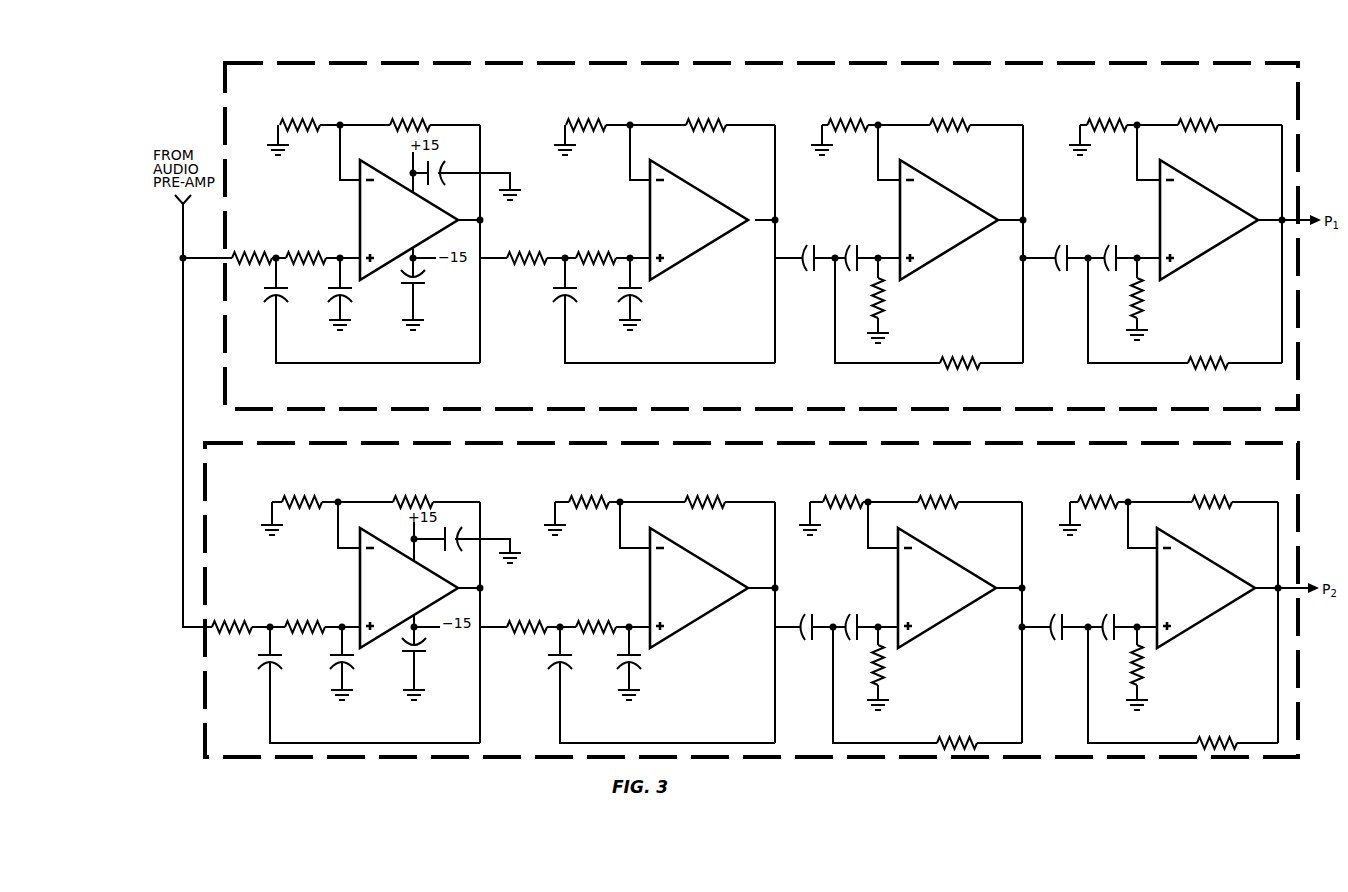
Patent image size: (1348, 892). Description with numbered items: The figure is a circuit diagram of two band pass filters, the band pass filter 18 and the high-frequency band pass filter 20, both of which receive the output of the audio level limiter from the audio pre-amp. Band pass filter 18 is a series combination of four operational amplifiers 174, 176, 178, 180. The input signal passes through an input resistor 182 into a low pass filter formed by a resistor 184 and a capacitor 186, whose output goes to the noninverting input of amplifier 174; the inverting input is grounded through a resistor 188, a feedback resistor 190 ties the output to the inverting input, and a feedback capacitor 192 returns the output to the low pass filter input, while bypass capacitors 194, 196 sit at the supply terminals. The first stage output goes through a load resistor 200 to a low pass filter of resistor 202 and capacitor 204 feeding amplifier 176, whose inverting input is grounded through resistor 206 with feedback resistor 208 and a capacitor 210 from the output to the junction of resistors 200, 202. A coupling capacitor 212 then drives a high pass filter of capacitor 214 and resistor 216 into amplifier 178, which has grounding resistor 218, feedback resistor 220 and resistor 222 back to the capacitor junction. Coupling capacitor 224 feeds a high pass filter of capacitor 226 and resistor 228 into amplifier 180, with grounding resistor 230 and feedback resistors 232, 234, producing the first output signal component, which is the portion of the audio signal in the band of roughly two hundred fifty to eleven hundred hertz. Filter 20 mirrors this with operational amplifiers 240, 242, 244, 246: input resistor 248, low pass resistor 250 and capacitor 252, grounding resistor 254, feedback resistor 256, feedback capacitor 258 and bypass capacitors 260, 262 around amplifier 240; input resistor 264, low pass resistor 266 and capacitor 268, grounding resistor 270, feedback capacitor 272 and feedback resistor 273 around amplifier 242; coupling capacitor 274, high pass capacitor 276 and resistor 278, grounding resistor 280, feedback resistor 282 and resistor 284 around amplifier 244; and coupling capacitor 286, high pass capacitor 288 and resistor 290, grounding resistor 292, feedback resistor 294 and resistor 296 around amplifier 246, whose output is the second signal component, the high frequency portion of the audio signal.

The band pass filter 18 is at (428, 63).
The high-frequency band pass filter 20 is at (204, 733).
The operational amplifier 174 is at (407, 229).
The operational amplifier 176 is at (692, 227).
The operational amplifier 178 is at (947, 231).
The operational amplifier 180 is at (1209, 231).
The input resistor 182 is at (252, 250).
The resistor 184 is at (307, 250).
The capacitor 186 is at (330, 298).
The resistor 188 is at (304, 118).
The feedback resistor 190 is at (425, 118).
The feedback capacitor 192 is at (270, 300).
The bypass capacitor 194 is at (448, 159).
The bypass capacitor 196 is at (425, 288).
The load resistor 200 is at (526, 247).
The resistor 202 is at (594, 247).
The capacitor 204 is at (650, 296).
The resistor 206 is at (586, 120).
The feedback resistor 208 is at (708, 120).
The capacitor 210 is at (550, 300).
The coupling capacitor 212 is at (804, 242).
The capacitor 214 is at (856, 242).
The resistor 216 is at (884, 300).
The resistor 218 is at (846, 118).
The resistor 220 is at (958, 118).
The resistor 222 is at (964, 357).
The coupling capacitor 224 is at (1058, 242).
The capacitor 226 is at (1108, 242).
The resistor 228 is at (1141, 296).
The resistor 230 is at (1112, 116).
The feedback resistor 232 is at (1206, 116).
The feedback resistor 234 is at (1210, 357).
The operational amplifier 240 is at (404, 601).
The operational amplifier 242 is at (694, 601).
The operational amplifier 244 is at (945, 601).
The operational amplifier 246 is at (1207, 601).
The input resistor 248 is at (234, 617).
The resistor 250 is at (307, 617).
The capacitor 252 is at (333, 665).
The resistor 254 is at (306, 493).
The feedback resistor 256 is at (417, 499).
The feedback capacitor 258 is at (260, 665).
The bypass capacitor 260 is at (460, 536).
The bypass capacitor 262 is at (424, 670).
The input resistor 264 is at (526, 617).
The resistor 266 is at (594, 617).
The capacitor 268 is at (639, 672).
The resistor 270 is at (596, 495).
The capacitor 272 is at (550, 665).
The resistor 273 is at (706, 495).
The coupling capacitor 274 is at (810, 621).
The capacitor 276 is at (854, 621).
The resistor 278 is at (881, 670).
The resistor 280 is at (846, 493).
The feedback resistor 282 is at (946, 493).
The resistor 284 is at (958, 736).
The coupling capacitor 286 is at (1056, 621).
The capacitor 288 is at (1106, 621).
The resistor 290 is at (1140, 670).
The resistor 292 is at (1100, 493).
The feedback resistor 294 is at (1210, 493).
The resistor 296 is at (1220, 736).